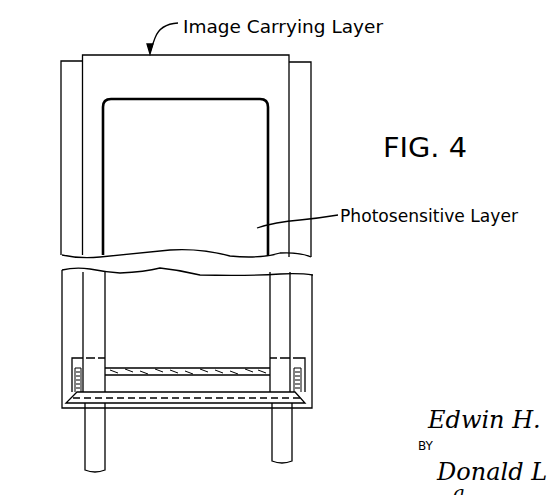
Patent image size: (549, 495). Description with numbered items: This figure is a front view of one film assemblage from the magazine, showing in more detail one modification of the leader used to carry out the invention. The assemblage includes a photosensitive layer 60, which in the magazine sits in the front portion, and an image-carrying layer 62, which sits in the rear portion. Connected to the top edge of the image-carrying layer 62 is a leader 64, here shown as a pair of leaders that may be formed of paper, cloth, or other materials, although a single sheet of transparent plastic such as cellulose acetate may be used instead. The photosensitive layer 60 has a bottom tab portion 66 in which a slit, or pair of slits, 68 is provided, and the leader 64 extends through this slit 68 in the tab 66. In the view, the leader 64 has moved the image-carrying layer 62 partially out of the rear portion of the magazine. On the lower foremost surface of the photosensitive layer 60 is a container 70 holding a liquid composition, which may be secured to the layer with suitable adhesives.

The photosensitive layer 60 is at (120, 142).
The image-carrying layer 62 is at (122, 53).
The leader 64 is at (90, 173).
The bottom tab portion 66 is at (173, 400).
The slit 68 is at (95, 406).
The container 70 is at (170, 373).